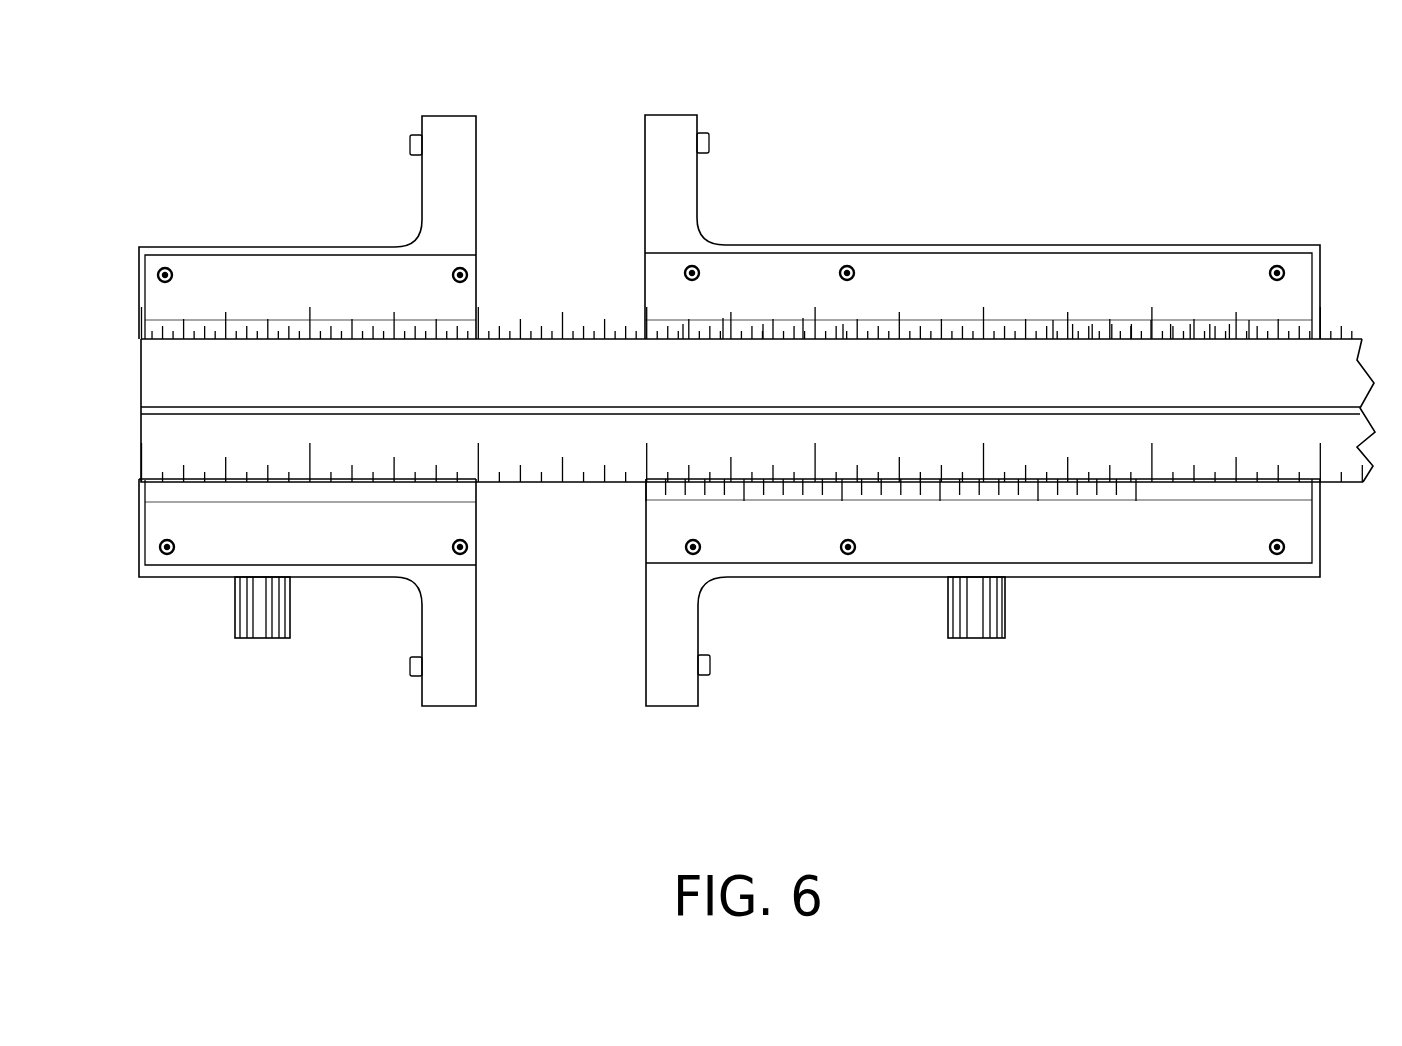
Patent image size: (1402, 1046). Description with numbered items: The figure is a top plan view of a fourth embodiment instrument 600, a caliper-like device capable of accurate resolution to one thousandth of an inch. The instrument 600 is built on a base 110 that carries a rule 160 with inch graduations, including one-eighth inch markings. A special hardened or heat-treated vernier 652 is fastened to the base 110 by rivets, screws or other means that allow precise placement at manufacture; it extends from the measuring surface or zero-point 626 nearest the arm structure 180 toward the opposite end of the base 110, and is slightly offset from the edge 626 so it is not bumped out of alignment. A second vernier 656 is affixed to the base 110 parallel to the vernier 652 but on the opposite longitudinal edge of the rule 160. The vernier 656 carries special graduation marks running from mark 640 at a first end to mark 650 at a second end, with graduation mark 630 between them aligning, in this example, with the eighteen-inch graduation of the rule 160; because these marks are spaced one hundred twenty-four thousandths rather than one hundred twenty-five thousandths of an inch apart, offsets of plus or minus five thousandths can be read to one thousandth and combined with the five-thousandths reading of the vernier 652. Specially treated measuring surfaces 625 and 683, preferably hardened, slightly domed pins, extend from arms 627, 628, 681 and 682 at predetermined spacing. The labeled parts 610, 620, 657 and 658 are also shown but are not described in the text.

The instrument 600 is at (1130, 68).
The base 110 is at (1177, 578).
The rule 160 is at (550, 480).
The arm structure 180 is at (385, 580).
The vernier scale 610 is at (663, 490).
The sliding jaw assembly 620 is at (909, 637).
The measuring surface 625 is at (709, 140).
The measuring surface or zero-point 626 is at (747, 495).
The arm 627 is at (675, 688).
The arm 628 is at (652, 143).
The graduation mark 630 is at (1152, 325).
The mark 640 is at (1248, 330).
The mark 650 is at (1055, 327).
The vernier 652 is at (1023, 552).
The second vernier 656 is at (658, 290).
The upper fixed jaw body 657 is at (200, 267).
The lower fixed jaw body 658 is at (210, 533).
The arm 681 is at (433, 700).
The arm 682 is at (440, 123).
The measuring surface 683 is at (410, 143).